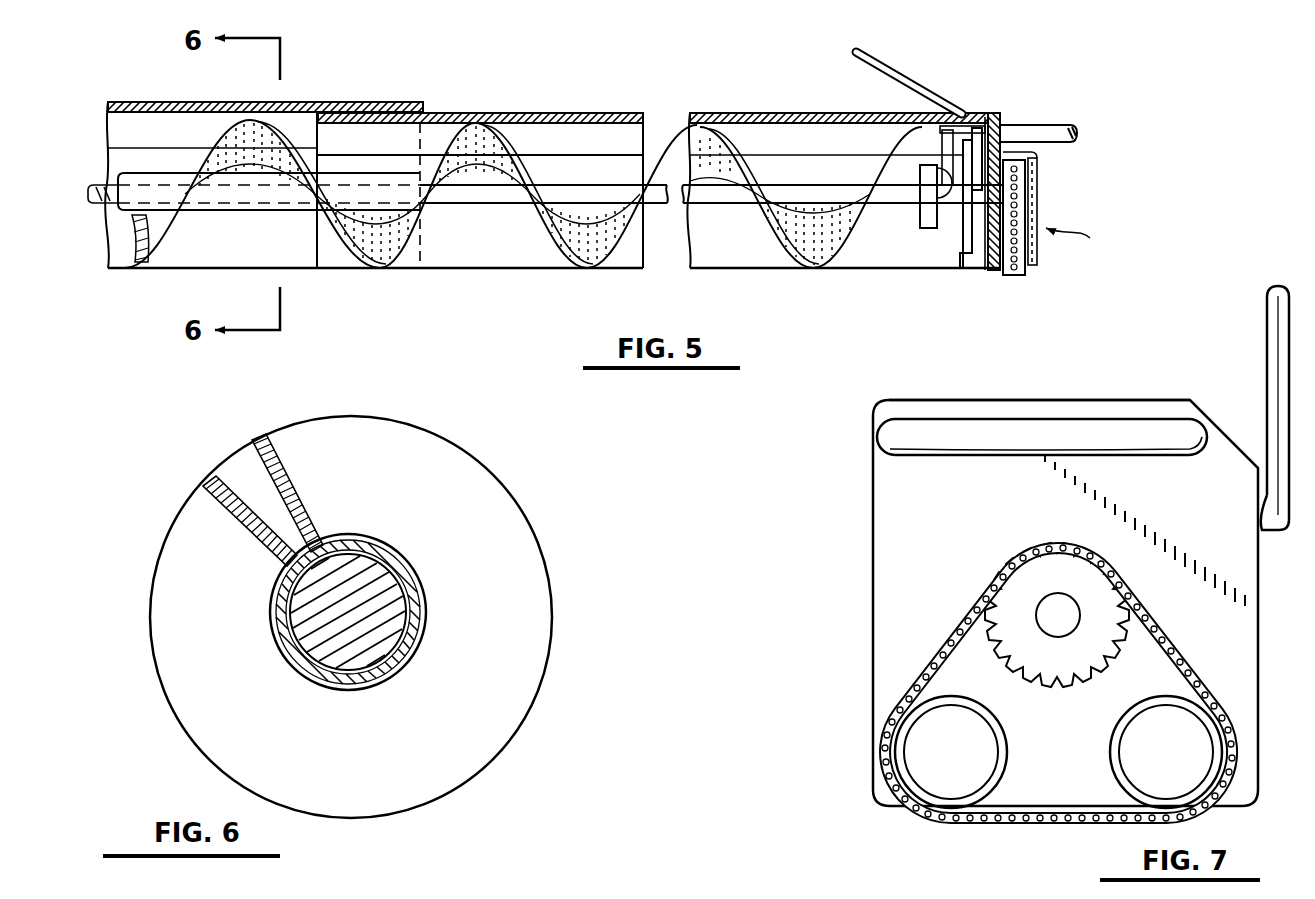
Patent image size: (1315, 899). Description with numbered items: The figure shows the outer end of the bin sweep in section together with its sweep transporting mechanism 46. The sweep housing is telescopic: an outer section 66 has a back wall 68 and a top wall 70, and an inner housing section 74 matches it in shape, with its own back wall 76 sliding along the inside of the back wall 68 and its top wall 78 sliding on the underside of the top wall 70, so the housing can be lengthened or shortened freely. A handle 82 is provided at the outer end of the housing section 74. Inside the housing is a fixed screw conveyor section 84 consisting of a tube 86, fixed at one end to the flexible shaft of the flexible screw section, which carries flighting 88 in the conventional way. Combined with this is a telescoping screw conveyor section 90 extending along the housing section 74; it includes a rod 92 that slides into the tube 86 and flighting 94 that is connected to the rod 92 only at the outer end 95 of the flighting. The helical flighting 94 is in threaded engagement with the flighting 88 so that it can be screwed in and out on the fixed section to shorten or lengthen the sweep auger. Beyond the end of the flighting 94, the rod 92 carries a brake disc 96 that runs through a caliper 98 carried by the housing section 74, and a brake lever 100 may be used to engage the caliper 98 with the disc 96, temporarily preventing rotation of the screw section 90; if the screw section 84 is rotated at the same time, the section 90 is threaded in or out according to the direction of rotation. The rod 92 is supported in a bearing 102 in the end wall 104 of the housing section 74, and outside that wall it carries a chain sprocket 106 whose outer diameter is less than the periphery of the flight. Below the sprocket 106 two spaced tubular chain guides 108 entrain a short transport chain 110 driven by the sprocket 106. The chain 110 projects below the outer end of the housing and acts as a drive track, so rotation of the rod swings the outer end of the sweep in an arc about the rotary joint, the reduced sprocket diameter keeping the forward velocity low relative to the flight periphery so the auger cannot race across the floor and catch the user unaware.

In FIG. 5, the sweep transporting mechanism 46 is at (1084, 241).
In FIG. 5, the outer section 66 is at (300, 100).
In FIG. 5, the back wall 68 is at (290, 243).
In FIG. 5, the top wall 70 is at (192, 98).
In FIG. 5, the housing section 74 is at (615, 110).
In FIG. 5, the back wall 76 is at (750, 243).
In FIG. 5, the top wall 78 is at (800, 110).
In FIG. 7, the top wall 78 is at (1100, 404).
In FIG. 5, the handle 82 is at (1080, 130).
In FIG. 7, the handle 82 is at (1058, 420).
In FIG. 5, the fixed screw conveyor section 84 is at (162, 163).
In FIG. 5, the tube 86 is at (265, 200).
In FIG. 6, the tube 86 is at (374, 670).
In FIG. 5, the flighting 88 is at (372, 242).
In FIG. 6, the flighting 88 is at (240, 470).
In FIG. 5, the telescoping screw conveyor section 90 is at (554, 174).
In FIG. 5, the rod 92 is at (498, 200).
In FIG. 6, the rod 92 is at (372, 605).
In FIG. 5, the flighting 94 is at (600, 240).
In FIG. 6, the flighting 94 is at (478, 525).
In FIG. 5, the outer end 95 is at (942, 228).
In FIG. 5, the brake disc 96 is at (965, 258).
In FIG. 5, the caliper 98 is at (985, 120).
In FIG. 5, the brake lever 100 is at (892, 66).
In FIG. 7, the brake lever 100 is at (1266, 352).
In FIG. 5, the bearing 102 is at (1030, 165).
In FIG. 5, the end wall 104 is at (995, 272).
In FIG. 7, the end wall 104 is at (890, 613).
In FIG. 7, the chain sprocket 106 is at (1005, 595).
In FIG. 7, the tubular chain guides 108 is at (920, 770).
In FIG. 5, the transport chain 110 is at (1033, 268).
In FIG. 7, the transport chain 110 is at (1217, 665).